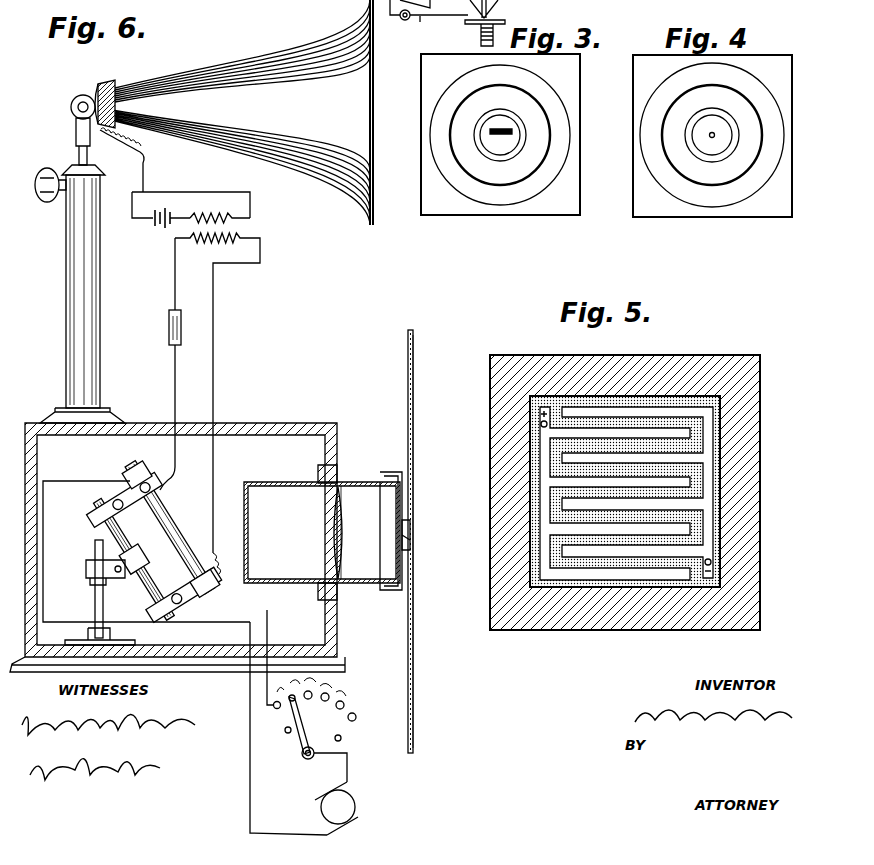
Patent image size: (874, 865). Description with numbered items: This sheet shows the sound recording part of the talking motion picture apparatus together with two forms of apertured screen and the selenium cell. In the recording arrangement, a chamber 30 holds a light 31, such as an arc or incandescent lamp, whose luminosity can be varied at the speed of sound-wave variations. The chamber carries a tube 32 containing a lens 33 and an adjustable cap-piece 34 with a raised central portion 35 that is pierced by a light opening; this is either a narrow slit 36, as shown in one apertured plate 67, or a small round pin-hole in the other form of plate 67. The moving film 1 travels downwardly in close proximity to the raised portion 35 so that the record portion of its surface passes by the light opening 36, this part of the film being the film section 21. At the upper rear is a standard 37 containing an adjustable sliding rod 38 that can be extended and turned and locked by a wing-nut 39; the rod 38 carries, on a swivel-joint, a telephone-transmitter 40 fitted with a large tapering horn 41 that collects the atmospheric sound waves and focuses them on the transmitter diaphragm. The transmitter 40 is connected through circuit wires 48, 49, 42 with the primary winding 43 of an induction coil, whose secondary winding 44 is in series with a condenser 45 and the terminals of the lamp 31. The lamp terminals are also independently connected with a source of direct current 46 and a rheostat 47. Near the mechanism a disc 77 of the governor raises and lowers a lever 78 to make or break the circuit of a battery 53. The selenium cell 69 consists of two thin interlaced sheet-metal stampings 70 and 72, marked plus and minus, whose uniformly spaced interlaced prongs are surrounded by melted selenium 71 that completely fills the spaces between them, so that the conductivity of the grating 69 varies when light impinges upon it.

In FIG. 6, the moving film 1 is at (414, 712).
In FIG. 6, the film section 21 is at (414, 504).
In FIG. 6, the chamber 30 is at (177, 547).
In FIG. 6, the light 31 is at (146, 550).
In FIG. 6, the tube 32 is at (305, 490).
In FIG. 6, the lens 33 is at (330, 548).
In FIG. 6, the adjustable cap-piece 34 is at (400, 504).
In FIG. 6, the raised central portion 35 is at (402, 526).
In FIG. 6, the narrow slit 36 is at (402, 542).
In FIG. 3, the narrow slit 36 is at (500, 135).
In FIG. 4, the narrow slit 36 is at (712, 138).
In FIG. 6, the standard 37 is at (66, 306).
In FIG. 6, the adjustable sliding rod 38 is at (76, 134).
In FIG. 6, the wing-nut 39 is at (45, 202).
In FIG. 6, the telephone-transmitter 40 is at (104, 90).
In FIG. 6, the horn 41 is at (244, 112).
In FIG. 6, the circuit wire 42 is at (152, 224).
In FIG. 6, the primary winding 43 is at (244, 221).
In FIG. 6, the secondary winding 44 is at (217, 403).
In FIG. 6, the condenser 45 is at (168, 328).
In FIG. 6, the source of direct current 46 is at (350, 805).
In FIG. 6, the rheostat 47 is at (348, 700).
In FIG. 6, the circuit wire 48 is at (132, 200).
In FIG. 6, the circuit wire 49 is at (144, 173).
In FIG. 6, the battery 53 is at (282, 0).
In FIG. 3, the plate 67 is at (500, 135).
In FIG. 4, the plate 67 is at (712, 135).
In FIG. 5, the selenium cell 69 is at (703, 356).
In FIG. 5, the sheet-metal stamping 70 is at (542, 562).
In FIG. 5, the selenium 71 is at (718, 482).
In FIG. 5, the sheet-metal stamping 72 is at (708, 412).
In FIG. 6, the disc 77 is at (505, 20).
In FIG. 6, the lever 78 is at (429, 22).